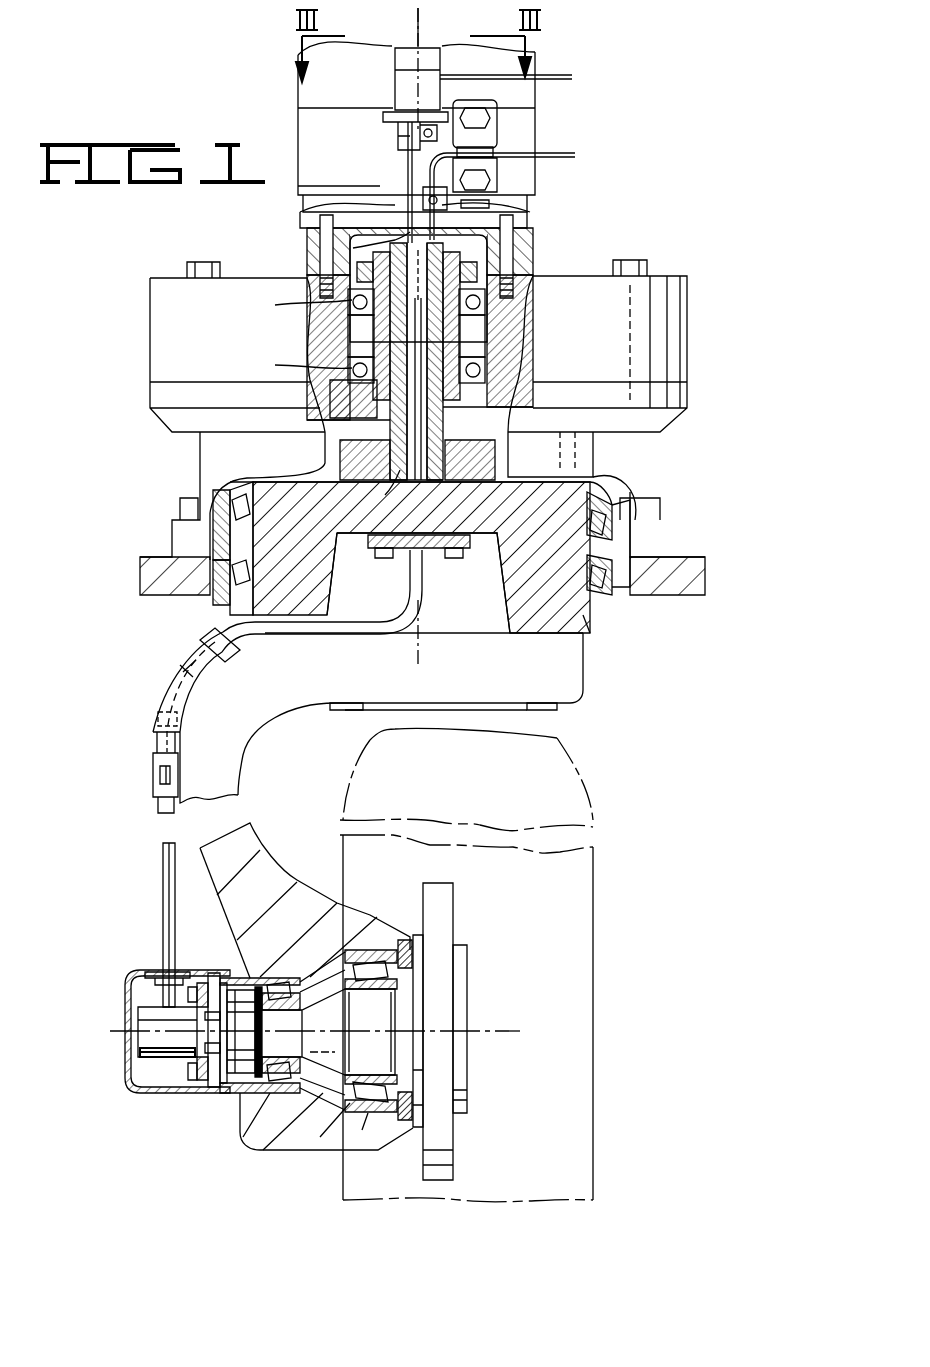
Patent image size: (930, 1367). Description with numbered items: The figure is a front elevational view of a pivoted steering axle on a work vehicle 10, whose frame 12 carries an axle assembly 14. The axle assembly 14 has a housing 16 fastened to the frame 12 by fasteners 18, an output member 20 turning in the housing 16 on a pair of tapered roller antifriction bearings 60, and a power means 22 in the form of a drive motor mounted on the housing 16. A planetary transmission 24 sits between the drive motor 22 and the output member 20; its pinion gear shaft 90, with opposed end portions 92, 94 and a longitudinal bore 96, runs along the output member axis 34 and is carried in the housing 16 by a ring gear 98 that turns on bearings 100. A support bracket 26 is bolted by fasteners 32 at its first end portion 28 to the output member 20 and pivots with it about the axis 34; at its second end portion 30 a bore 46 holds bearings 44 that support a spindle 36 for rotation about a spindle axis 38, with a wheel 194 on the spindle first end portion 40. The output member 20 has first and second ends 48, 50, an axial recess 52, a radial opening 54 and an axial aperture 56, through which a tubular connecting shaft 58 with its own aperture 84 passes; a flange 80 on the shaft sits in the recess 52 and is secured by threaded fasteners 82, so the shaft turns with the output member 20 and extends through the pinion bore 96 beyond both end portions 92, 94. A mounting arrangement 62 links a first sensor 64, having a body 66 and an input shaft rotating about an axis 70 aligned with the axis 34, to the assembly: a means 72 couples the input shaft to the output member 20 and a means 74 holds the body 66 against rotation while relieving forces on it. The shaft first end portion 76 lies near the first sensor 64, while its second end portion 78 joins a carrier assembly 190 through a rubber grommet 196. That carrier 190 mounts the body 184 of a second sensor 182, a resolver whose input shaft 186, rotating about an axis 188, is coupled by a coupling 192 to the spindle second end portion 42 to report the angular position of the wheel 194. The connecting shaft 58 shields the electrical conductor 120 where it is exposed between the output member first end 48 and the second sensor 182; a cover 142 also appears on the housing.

The work vehicle 10 is at (696, 481).
The frame 12 is at (700, 595).
The axle assembly 14 is at (655, 186).
The housing 16 is at (687, 328).
The fasteners 18 is at (178, 500).
The output member 20 is at (572, 614).
The power means 22 is at (540, 132).
The transmission 24 is at (422, 495).
The support bracket 26 is at (238, 770).
The first end portion 28 is at (583, 690).
The second end portion 30 is at (275, 1165).
The fasteners 32 is at (363, 712).
The longitudinal axis 34 is at (420, 655).
The spindle 36 is at (385, 1019).
The longitudinal axis 38 is at (495, 1031).
The first end portion 40 is at (467, 993).
The second end portion 42 is at (210, 1085).
The bearings 44 is at (270, 975).
The bore 46 is at (305, 1102).
The first end 48 is at (560, 638).
The second end 50 is at (605, 490).
The recess 52 is at (510, 615).
The opening 54 is at (290, 640).
The aperture 56 is at (408, 478).
The connecting shaft 58 is at (225, 628).
The antifriction bearings 60 is at (612, 525).
The mounting arrangement 62 is at (497, 97).
The first sensor 64 is at (395, 83).
The body 66 is at (395, 62).
The input shaft axis 70 is at (425, 42).
The means for connecting the input shaft 72 is at (390, 143).
The means for connecting the body 74 is at (448, 98).
The first end portion 76 is at (405, 200).
The second end portion 78 is at (160, 945).
The flange 80 is at (480, 568).
The threaded fastener 82 is at (393, 560).
The aperture 84 is at (355, 246).
The pinion gear shaft 90 is at (443, 345).
The end portion 92 is at (500, 230).
The end portion 94 is at (430, 445).
The longitudinal bore 96 is at (365, 332).
The ring gear 98 is at (490, 320).
The bearings 100 is at (286, 336).
The electrical conductor 120 is at (576, 160).
The housing cover 142 is at (320, 208).
The second sensor 182 is at (142, 1050).
The body 184 is at (150, 1012).
The input shaft 186 is at (205, 975).
The second sensor input shaft axis 188 is at (118, 1031).
The carrier assembly 190 is at (173, 1097).
The coupling 192 is at (210, 1045).
The wheel 194 is at (597, 898).
The rubber grommet 196 is at (150, 972).